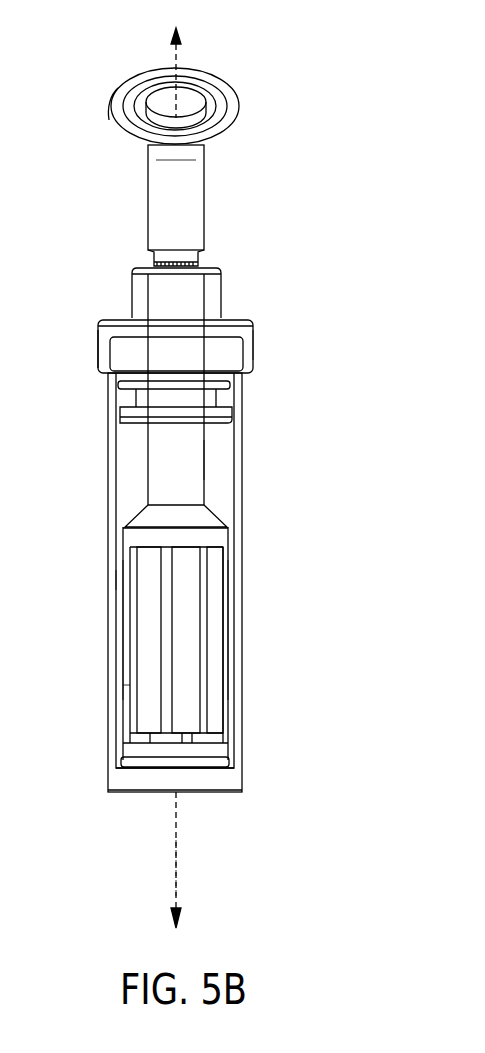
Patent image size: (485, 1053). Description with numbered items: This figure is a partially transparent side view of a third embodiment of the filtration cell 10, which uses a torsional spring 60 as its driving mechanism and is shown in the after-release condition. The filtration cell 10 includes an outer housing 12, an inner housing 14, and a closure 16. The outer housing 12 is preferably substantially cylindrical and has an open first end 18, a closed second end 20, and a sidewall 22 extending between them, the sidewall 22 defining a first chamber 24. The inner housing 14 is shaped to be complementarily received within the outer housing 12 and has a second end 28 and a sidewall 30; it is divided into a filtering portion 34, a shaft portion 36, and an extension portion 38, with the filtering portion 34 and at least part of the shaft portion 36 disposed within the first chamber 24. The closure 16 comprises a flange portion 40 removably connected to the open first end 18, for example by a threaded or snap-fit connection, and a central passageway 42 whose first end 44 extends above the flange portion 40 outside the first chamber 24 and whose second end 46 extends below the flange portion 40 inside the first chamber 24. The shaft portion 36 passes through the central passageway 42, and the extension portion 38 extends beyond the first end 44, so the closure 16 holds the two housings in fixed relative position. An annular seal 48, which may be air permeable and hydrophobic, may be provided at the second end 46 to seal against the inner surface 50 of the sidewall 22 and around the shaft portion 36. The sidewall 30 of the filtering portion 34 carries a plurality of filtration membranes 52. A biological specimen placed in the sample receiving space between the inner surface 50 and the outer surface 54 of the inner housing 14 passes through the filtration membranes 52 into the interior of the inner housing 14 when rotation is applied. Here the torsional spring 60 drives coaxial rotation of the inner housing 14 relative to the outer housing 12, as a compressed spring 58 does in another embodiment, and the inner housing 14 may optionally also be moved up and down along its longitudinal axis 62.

The filtration cell 10 is at (271, 196).
The outer housing 12 is at (235, 428).
The inner housing 14 is at (210, 525).
The closure 16 is at (247, 333).
The open first end 18 is at (237, 338).
The closed second end 20 is at (205, 793).
The sidewall 22 is at (228, 605).
The first chamber 24 is at (225, 473).
The second end 28 is at (222, 765).
The sidewall 30 is at (130, 540).
The filtering portion 34 is at (122, 627).
The shaft portion 36 is at (152, 462).
The extension portion 38 is at (148, 190).
The flange portion 40 is at (98, 337).
The central passageway 42 is at (132, 293).
The first end 44 is at (148, 265).
The second end 46 is at (128, 420).
The annular seal 48 is at (118, 413).
The inner surface 50 is at (121, 692).
The filtration membrane 52 is at (192, 685).
The outer surface 54 is at (113, 580).
The compressed spring 58 is at (162, 172).
The torsional spring 60 is at (118, 92).
The longitudinal axis 62 is at (176, 865).